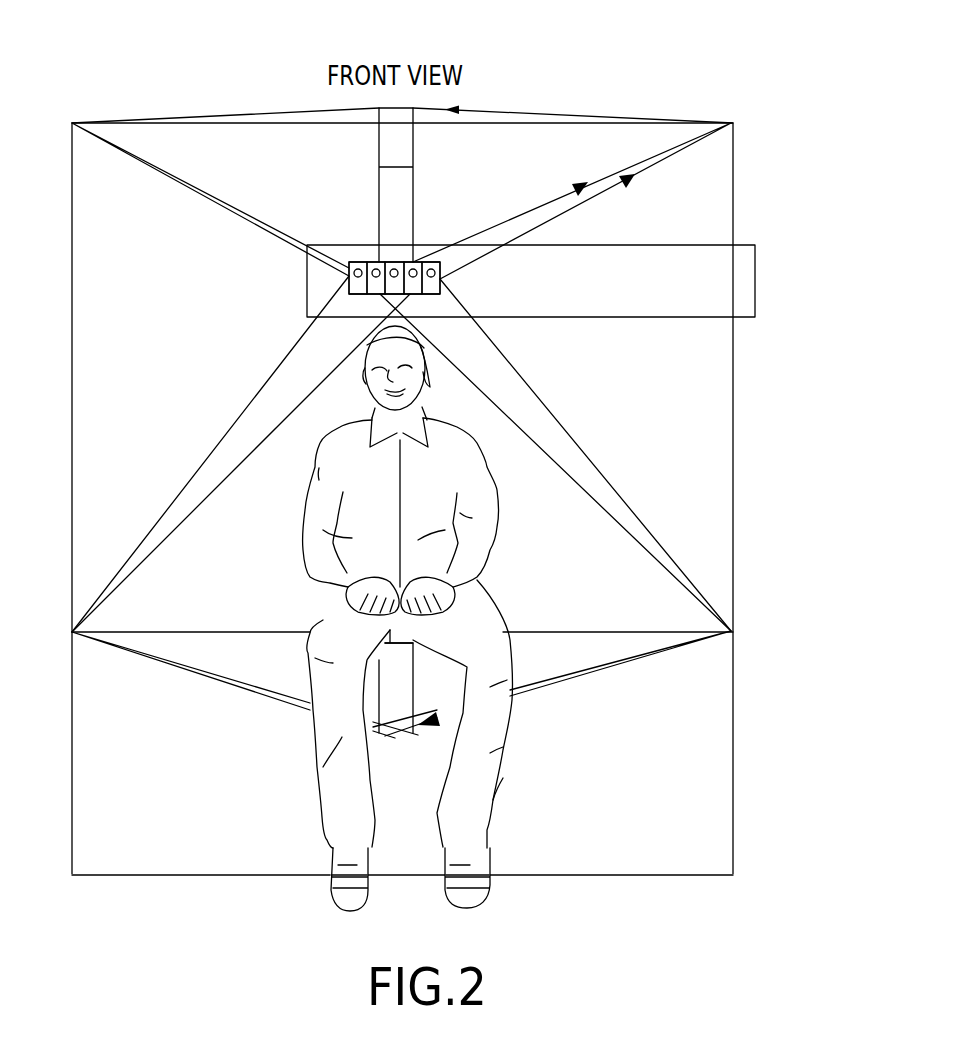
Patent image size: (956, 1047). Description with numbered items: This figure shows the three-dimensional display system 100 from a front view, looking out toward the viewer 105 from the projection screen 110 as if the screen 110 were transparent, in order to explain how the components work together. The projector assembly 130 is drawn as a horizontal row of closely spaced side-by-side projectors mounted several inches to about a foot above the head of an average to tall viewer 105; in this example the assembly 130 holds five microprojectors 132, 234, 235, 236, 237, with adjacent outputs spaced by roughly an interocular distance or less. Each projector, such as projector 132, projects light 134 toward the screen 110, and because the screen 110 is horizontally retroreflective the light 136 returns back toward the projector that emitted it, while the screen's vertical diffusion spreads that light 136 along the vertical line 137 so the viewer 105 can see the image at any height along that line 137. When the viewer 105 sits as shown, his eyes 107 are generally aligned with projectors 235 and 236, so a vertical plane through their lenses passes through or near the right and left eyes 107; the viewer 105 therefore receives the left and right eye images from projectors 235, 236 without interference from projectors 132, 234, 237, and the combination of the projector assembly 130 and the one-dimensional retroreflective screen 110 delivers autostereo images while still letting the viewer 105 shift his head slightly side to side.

The 3D display system 100 is at (770, 124).
The viewer 105 is at (497, 527).
The viewer's eyes 107 is at (420, 378).
The 1D retroreflective projection screen 110 is at (748, 672).
The projector assembly 130 is at (612, 245).
The projector 132 is at (373, 272).
The projected light 134 is at (543, 204).
The retroreflected light 136 is at (510, 113).
The line of vertical diffusion 137 is at (371, 148).
The microprojector 234 is at (360, 262).
The microprojector 235 is at (400, 262).
The microprojector 236 is at (438, 262).
The microprojector 237 is at (432, 294).